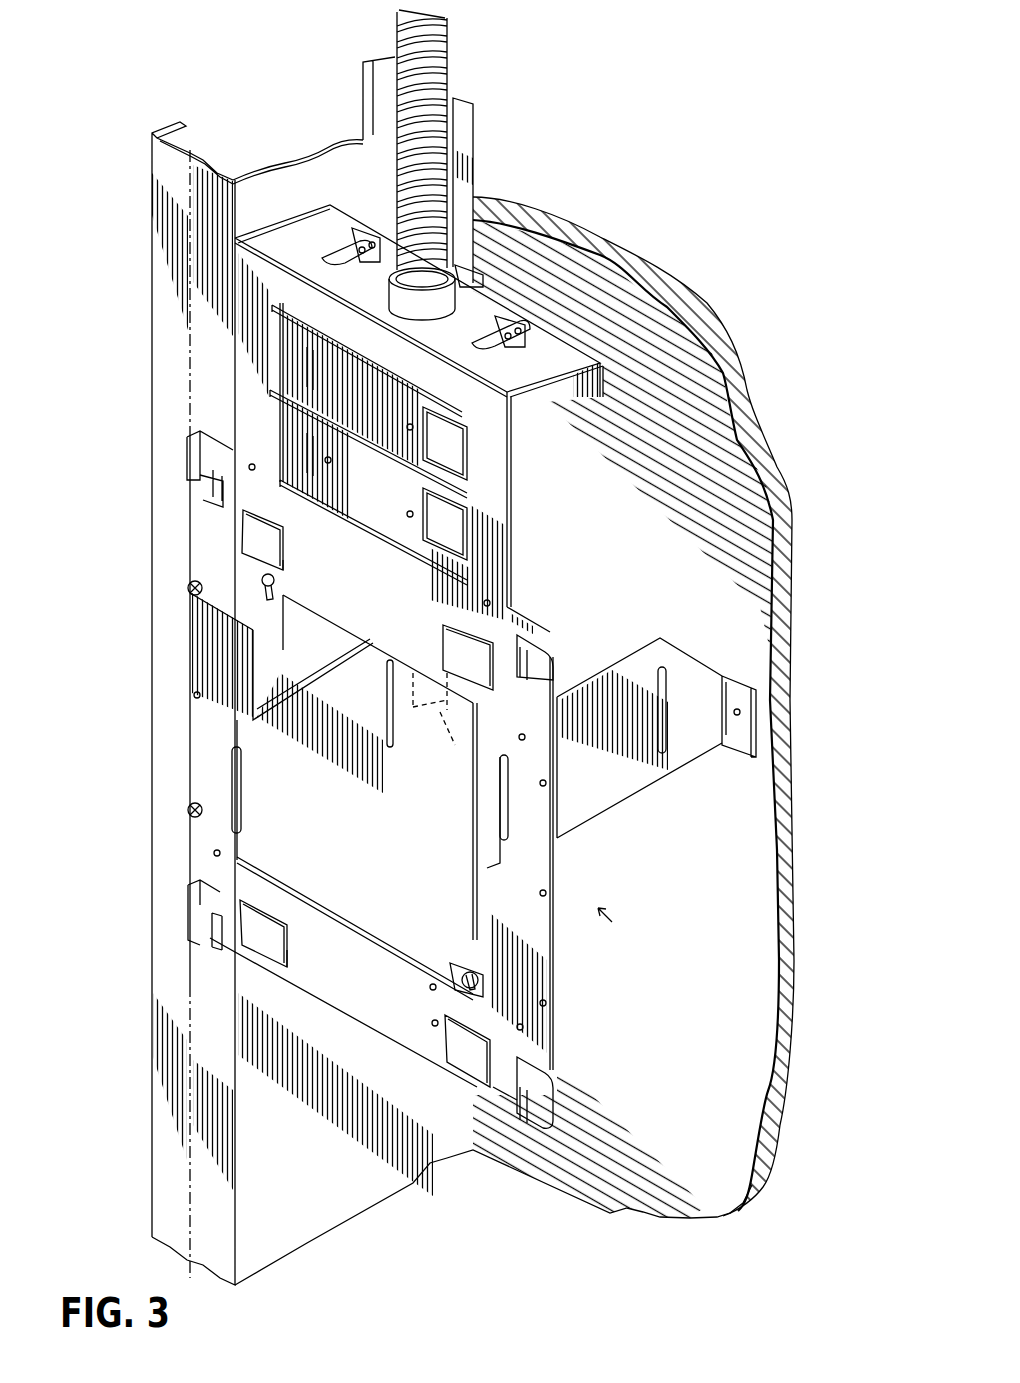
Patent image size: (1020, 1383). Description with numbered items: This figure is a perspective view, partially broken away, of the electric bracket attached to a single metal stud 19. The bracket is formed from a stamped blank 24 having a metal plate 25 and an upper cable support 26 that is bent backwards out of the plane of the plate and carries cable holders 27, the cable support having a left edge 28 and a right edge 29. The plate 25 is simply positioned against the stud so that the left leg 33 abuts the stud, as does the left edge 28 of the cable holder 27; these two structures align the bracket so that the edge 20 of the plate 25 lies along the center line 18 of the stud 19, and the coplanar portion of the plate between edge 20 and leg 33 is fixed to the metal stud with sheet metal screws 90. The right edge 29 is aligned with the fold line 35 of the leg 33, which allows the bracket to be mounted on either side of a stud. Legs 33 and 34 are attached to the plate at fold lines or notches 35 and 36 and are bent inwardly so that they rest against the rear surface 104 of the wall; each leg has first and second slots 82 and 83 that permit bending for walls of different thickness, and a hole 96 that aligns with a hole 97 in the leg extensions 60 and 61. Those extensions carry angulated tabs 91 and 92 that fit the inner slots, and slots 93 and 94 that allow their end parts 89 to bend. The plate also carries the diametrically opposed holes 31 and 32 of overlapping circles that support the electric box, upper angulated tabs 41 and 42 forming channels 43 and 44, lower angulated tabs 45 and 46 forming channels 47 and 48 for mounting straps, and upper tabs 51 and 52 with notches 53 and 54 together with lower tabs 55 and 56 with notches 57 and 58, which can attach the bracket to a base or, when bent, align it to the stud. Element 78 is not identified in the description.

The center line 18 is at (190, 352).
The stud 19 is at (152, 290).
The edge 20 is at (190, 731).
The stamped blank 24 is at (614, 926).
The metal plate 25 is at (397, 623).
The cable support 26 is at (372, 303).
The cable holder 27 is at (355, 228).
The left edge 28 is at (292, 209).
The right edge 29 is at (527, 396).
The hole 31 is at (278, 586).
The hole 32 is at (475, 993).
The leg 33 is at (597, 791).
The leg 34 is at (362, 691).
The fold line 35 is at (508, 806).
The fold notch 36 is at (243, 776).
The upper angulated tab 41 is at (262, 540).
The upper angulated tab 42 is at (468, 657).
The channel 43 is at (288, 568).
The channel 44 is at (512, 612).
The lower angulated tab 45 is at (263, 933).
The lower angulated tab 46 is at (467, 1051).
The channel 47 is at (292, 957).
The channel 48 is at (495, 1090).
The upper tab 51 is at (187, 458).
The upper tab 52 is at (553, 646).
The notch 53 is at (205, 488).
The notch 54 is at (527, 661).
The lower tab 55 is at (188, 903).
The lower tab 56 is at (560, 1096).
The notch 57 is at (217, 947).
The notch 58 is at (523, 1125).
The leg extension 60 is at (390, 405).
The leg extension 61 is at (390, 500).
The fastener 78 is at (460, 966).
The first slot 82 is at (737, 690).
The second slot 83 is at (663, 667).
The end part 89 is at (290, 348).
The screw 90 is at (195, 588).
The angulated tab 91 is at (435, 453).
The angulated tab 92 is at (435, 538).
The slot 93 is at (317, 371).
The slot 94 is at (283, 483).
The hole 96 is at (738, 716).
The hole 97 is at (410, 424).
The rear surface 104 is at (684, 1010).